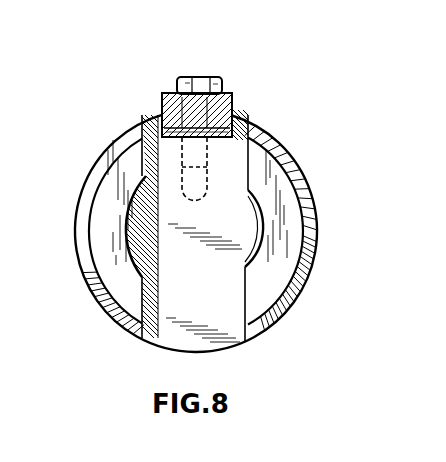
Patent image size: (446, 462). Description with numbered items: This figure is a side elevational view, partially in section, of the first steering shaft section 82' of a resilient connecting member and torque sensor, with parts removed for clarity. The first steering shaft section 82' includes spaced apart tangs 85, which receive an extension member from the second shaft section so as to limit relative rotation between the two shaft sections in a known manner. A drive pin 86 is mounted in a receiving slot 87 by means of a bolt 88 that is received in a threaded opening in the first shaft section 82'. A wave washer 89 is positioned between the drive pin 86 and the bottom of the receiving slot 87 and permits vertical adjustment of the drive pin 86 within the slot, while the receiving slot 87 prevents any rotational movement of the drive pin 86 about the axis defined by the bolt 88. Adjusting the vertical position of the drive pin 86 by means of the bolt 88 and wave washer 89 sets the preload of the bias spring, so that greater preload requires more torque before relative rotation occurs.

The first steering shaft section 82' is at (212, 233).
The tangs 85 is at (103, 217).
The drive pin 86 is at (232, 96).
The receiving slot 87 is at (213, 139).
The bolt 88 is at (213, 77).
The wave washer 89 is at (177, 138).